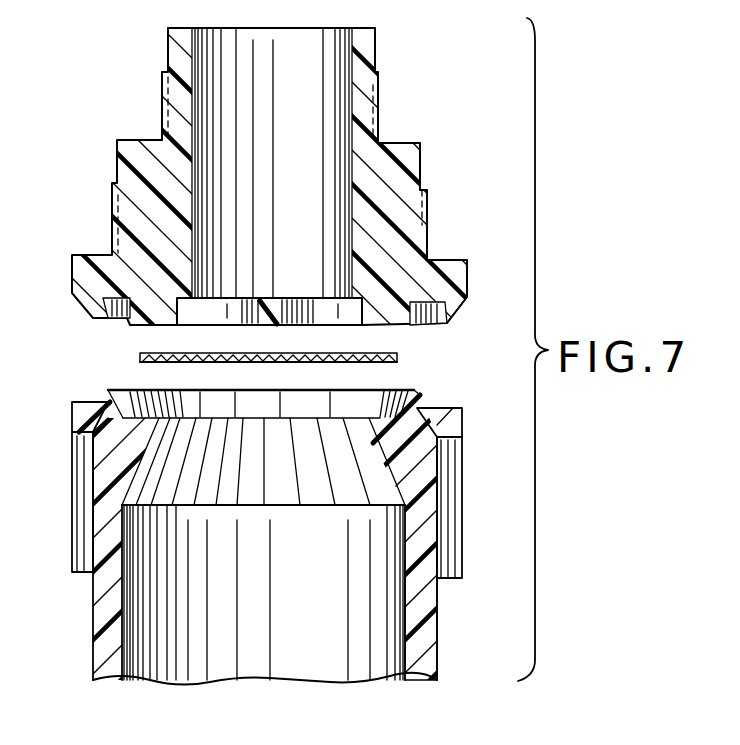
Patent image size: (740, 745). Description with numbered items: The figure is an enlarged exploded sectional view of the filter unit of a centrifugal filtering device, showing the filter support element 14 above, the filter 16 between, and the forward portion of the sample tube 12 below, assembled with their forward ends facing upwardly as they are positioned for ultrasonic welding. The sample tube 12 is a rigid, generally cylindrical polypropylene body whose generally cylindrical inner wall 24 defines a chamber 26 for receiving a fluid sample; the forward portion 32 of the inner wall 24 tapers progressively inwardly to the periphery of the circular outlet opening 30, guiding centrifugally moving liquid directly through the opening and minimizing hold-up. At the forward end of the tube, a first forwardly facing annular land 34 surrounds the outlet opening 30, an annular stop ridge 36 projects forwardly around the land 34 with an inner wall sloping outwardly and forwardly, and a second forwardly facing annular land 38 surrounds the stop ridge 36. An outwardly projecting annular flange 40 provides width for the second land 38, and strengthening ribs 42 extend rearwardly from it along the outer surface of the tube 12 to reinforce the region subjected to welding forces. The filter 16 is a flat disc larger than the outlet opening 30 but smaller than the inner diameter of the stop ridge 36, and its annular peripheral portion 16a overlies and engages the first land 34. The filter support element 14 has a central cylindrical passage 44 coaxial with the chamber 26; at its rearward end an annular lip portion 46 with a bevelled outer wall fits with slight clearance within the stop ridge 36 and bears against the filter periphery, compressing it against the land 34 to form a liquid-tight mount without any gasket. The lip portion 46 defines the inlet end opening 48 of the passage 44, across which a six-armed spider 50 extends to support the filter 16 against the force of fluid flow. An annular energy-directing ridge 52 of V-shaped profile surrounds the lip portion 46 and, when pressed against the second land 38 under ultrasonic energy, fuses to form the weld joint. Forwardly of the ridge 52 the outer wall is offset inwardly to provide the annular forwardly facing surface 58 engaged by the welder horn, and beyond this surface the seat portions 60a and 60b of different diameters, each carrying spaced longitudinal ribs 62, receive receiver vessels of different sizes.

The sample tube 12 is at (92, 637).
The filter support element 14 is at (104, 90).
The filter 16 is at (148, 356).
The annular peripheral portion of the filter 16a is at (145, 363).
The inner wall 24 is at (402, 628).
The chamber 26 is at (281, 612).
The outlet opening 30 is at (350, 432).
The forward portion of the inner wall 32 is at (380, 462).
The first forwardly facing annular land 34 is at (385, 420).
The annular stop ridge 36 is at (414, 397).
The second forwardly facing annular land 38 is at (455, 410).
The annular flange 40 is at (465, 424).
The strengthening ribs 42 is at (463, 502).
The central cylindrical passage 44 is at (278, 178).
The annular lip portion 46 is at (152, 310).
The inlet end opening 48 is at (314, 318).
The six-armed spider 50 is at (276, 298).
The annular energy-directing ridge 52 is at (457, 316).
The annular forwardly facing surface 58 is at (455, 260).
The seat portion 60a is at (424, 166).
The seat portion 60b is at (383, 70).
The longitudinal ribs 62 is at (381, 104).